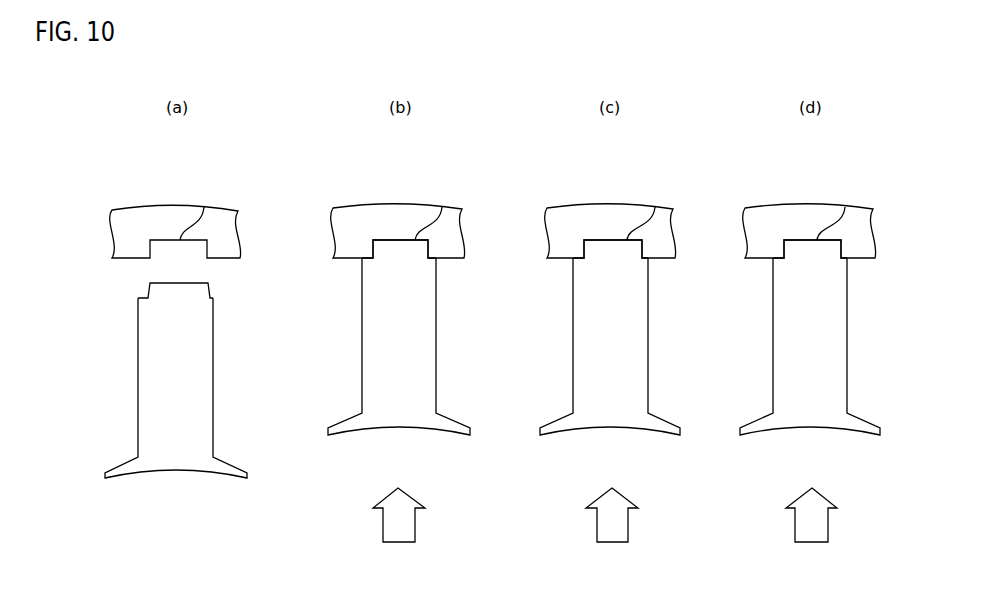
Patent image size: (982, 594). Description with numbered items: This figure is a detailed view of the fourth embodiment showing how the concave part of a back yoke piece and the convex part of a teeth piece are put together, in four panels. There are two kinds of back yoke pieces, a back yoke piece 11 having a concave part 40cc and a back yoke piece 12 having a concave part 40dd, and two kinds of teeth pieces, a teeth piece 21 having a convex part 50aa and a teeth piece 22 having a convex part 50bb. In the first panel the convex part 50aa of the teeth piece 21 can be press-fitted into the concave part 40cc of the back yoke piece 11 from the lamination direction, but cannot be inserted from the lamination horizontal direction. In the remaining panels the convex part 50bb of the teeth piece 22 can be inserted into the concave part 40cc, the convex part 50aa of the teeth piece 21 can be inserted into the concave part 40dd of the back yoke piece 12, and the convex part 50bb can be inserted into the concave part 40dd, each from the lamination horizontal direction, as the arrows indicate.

The back yoke piece 11 is at (133, 210).
The back yoke piece 12 is at (562, 208).
The teeth piece 21 is at (138, 377).
The teeth piece 22 is at (362, 393).
The concave part 40cc is at (204, 207).
The concave part 40dd is at (655, 207).
The convex part 50aa is at (150, 284).
The convex part 50bb is at (388, 243).